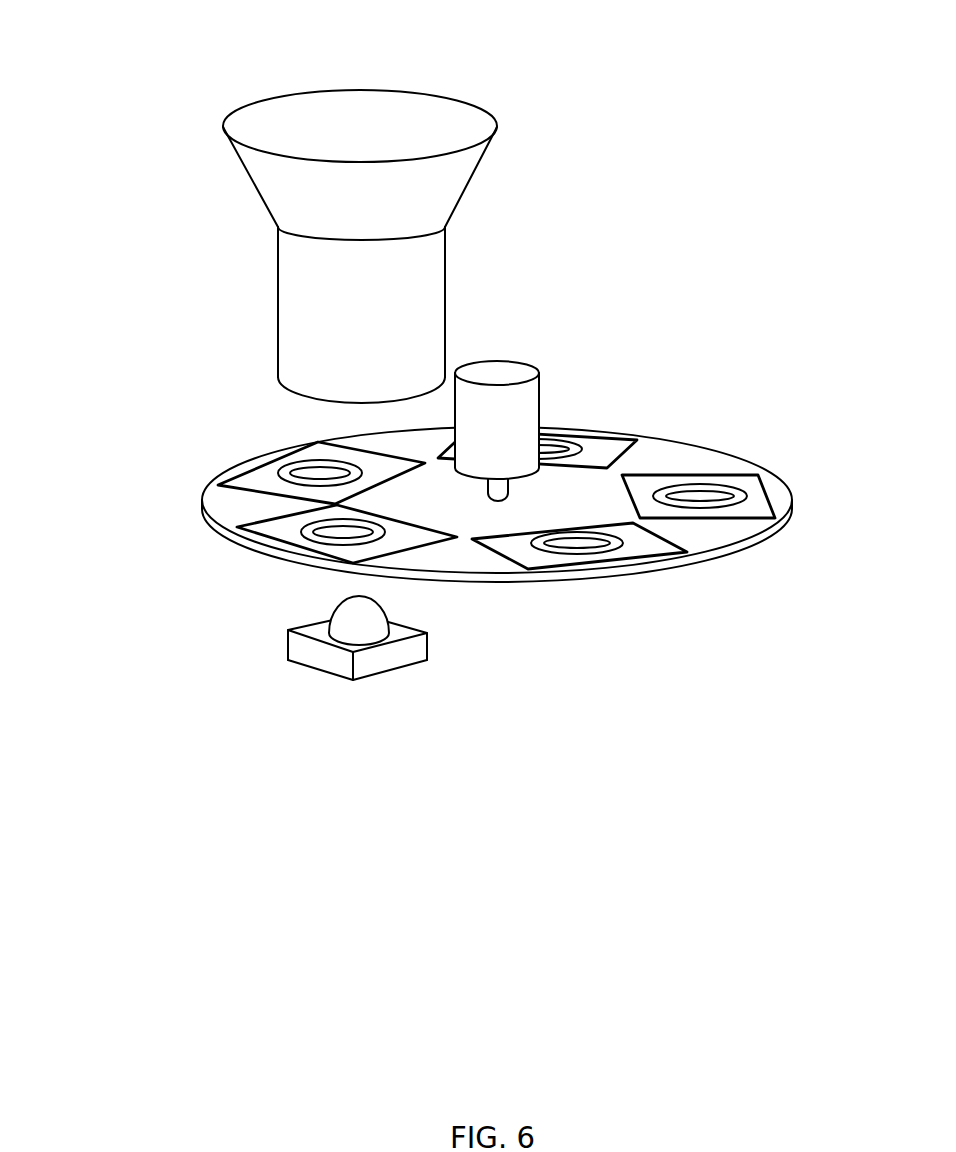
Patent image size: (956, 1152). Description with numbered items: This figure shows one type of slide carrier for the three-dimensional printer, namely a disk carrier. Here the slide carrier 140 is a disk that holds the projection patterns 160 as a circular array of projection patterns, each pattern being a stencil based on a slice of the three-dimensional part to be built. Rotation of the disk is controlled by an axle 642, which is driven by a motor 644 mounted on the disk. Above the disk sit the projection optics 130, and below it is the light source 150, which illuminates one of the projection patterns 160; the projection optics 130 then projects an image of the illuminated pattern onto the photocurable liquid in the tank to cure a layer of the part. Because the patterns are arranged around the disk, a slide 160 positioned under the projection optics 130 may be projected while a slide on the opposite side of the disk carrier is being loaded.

The projection optics 130 is at (497, 125).
The slide carrier 140 is at (683, 457).
The light source 150 is at (428, 655).
The projection patterns 160 is at (270, 452).
The axle 642 is at (687, 555).
The motor 644 is at (540, 376).